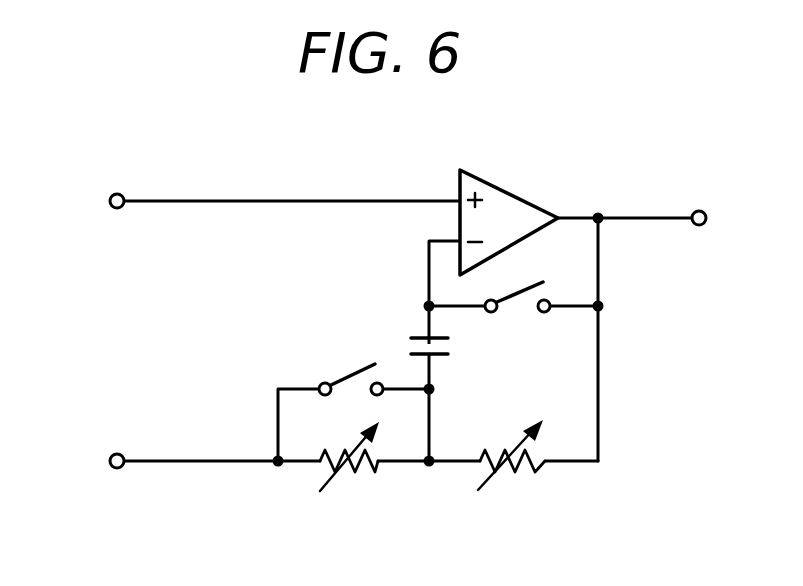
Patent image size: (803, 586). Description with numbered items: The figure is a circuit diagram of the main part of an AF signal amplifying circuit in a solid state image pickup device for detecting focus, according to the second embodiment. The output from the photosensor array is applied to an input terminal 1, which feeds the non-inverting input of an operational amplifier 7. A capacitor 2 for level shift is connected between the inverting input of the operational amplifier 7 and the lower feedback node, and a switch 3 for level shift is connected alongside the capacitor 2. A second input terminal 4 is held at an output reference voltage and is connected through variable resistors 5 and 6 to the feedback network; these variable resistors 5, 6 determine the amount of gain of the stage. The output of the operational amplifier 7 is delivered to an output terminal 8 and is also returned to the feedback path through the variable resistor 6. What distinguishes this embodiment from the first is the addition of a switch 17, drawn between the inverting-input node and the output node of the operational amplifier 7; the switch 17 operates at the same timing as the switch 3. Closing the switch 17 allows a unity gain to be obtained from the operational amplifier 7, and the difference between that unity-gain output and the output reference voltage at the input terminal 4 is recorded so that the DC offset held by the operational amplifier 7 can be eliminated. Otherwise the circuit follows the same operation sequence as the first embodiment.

The input terminal 1 is at (108, 201).
The capacitor 2 is at (412, 342).
The switch 3 is at (345, 370).
The input terminal 4 is at (108, 461).
The variable resistor 5 is at (350, 488).
The variable resistor 6 is at (512, 487).
The operational amplifier 7 is at (498, 182).
The output terminal 8 is at (704, 211).
The switch 17 is at (523, 314).